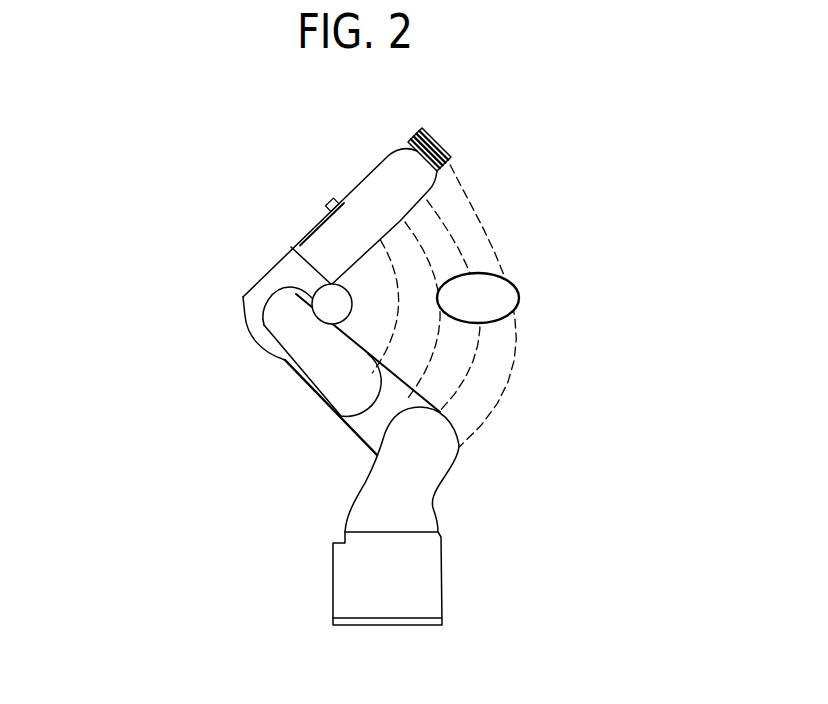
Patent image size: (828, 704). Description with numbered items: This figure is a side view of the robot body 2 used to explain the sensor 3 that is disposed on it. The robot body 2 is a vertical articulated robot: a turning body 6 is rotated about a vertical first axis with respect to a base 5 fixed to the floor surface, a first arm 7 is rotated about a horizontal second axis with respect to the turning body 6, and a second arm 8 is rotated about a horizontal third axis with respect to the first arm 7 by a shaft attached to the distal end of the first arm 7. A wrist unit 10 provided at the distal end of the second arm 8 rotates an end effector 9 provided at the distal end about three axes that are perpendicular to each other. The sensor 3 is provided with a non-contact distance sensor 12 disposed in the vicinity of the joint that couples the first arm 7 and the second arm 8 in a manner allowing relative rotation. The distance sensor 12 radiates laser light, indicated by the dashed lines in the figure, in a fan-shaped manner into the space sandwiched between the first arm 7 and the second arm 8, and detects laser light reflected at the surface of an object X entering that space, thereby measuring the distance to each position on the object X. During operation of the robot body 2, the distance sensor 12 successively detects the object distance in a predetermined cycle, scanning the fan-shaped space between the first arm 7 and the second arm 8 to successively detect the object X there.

The robot body 2 is at (229, 268).
The sensor 3 is at (348, 315).
The base 5 is at (443, 574).
The turning body 6 is at (454, 460).
The first arm 7 is at (293, 370).
The second arm 8 is at (382, 162).
The end effector 9 is at (436, 141).
The wrist unit 10 is at (448, 146).
The non-contact distance sensor 12 is at (315, 285).
The object X is at (492, 273).